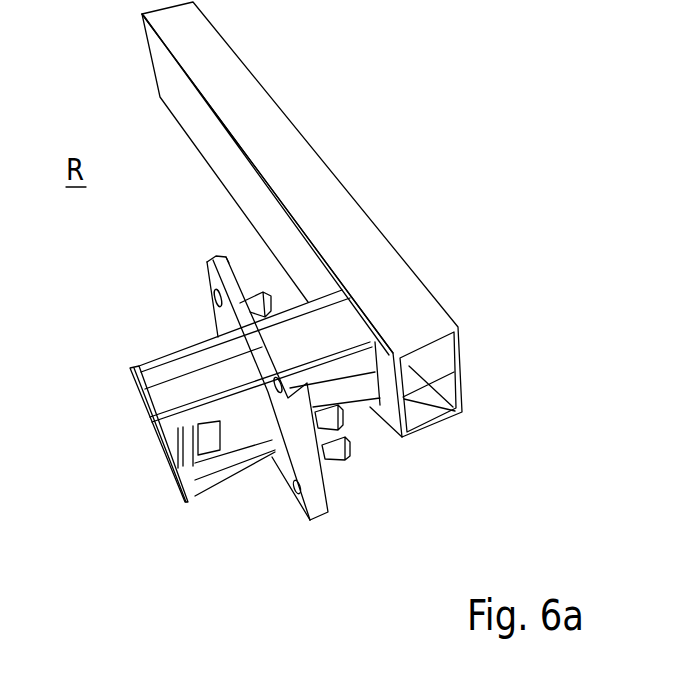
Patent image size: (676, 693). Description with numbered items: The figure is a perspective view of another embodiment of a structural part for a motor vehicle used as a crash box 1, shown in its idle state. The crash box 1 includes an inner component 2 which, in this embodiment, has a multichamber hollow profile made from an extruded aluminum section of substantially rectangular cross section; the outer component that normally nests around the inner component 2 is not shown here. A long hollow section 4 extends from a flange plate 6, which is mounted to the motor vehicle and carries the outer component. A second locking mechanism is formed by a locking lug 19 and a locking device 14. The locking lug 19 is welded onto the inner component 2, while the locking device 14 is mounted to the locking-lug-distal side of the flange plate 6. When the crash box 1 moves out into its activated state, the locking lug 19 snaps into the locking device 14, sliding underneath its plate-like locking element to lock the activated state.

The crash box 1 is at (120, 318).
The inner component 2 is at (355, 367).
The tube 4 is at (305, 160).
The flange plate 6 is at (318, 503).
The locking device 14 is at (352, 447).
The locking lug 19 is at (206, 442).